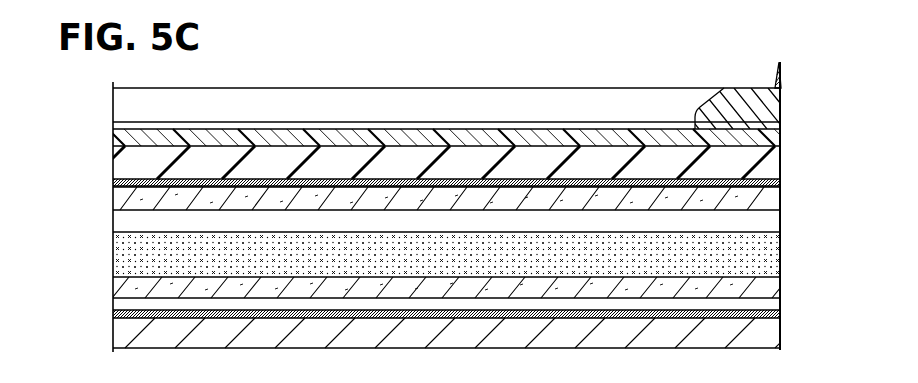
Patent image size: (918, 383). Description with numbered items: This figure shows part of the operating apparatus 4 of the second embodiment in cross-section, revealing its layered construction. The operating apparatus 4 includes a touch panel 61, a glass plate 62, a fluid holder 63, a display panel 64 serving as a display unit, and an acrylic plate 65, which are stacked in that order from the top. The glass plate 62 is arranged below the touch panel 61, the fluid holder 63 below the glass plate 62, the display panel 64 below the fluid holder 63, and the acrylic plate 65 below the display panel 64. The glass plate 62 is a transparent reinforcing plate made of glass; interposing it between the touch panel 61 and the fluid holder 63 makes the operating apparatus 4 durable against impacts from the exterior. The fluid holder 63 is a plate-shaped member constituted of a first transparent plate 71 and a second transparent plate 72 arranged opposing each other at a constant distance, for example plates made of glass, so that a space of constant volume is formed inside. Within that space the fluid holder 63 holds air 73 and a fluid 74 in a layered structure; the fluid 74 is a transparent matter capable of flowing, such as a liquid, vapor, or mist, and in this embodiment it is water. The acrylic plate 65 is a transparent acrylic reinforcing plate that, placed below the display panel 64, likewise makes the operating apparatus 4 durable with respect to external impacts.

The operating apparatus 4 is at (647, 68).
The touch panel 61 is at (118, 136).
The glass plate 62 is at (120, 163).
The fluid holder 63 is at (107, 189).
The display panel 64 is at (112, 313).
The acrylic plate 65 is at (123, 333).
The first transparent plate 71 is at (772, 202).
The second transparent plate 72 is at (772, 288).
The air 73 is at (768, 225).
The fluid 74 is at (772, 253).